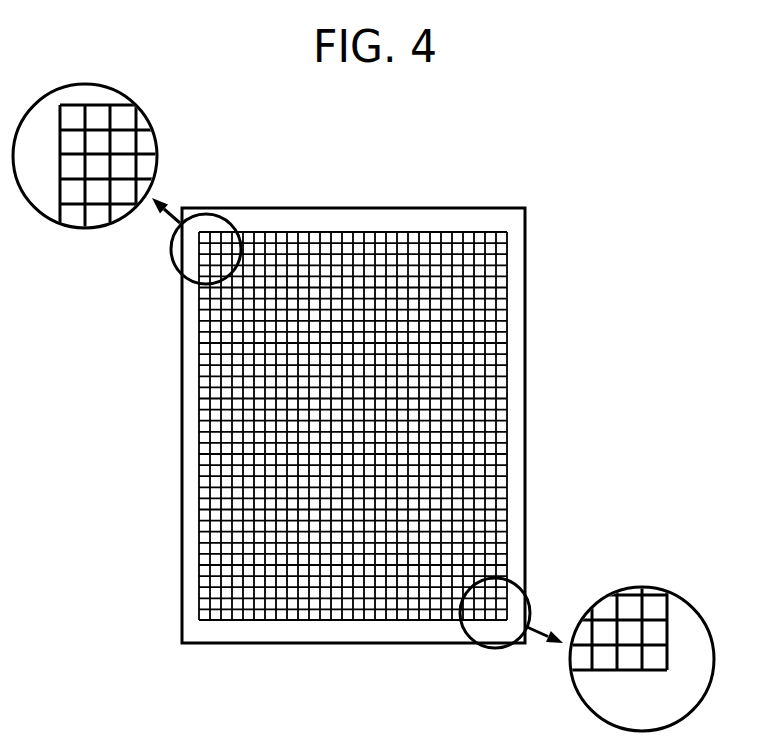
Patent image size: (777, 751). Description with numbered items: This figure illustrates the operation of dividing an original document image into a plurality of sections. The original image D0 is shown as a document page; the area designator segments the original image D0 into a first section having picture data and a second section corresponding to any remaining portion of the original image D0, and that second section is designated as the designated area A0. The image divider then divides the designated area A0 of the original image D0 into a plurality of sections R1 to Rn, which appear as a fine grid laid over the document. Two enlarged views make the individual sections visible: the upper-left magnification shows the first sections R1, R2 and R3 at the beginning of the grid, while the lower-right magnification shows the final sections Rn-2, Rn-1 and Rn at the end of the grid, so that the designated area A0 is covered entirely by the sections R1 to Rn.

The original image D0 is at (485, 207).
The designated area A0 is at (292, 232).
The section R1 is at (73, 113).
The section R2 is at (97, 113).
The section R3 is at (128, 115).
The section Rn-2 is at (602, 664).
The section Rn-1 is at (628, 662).
The section Rn is at (655, 664).